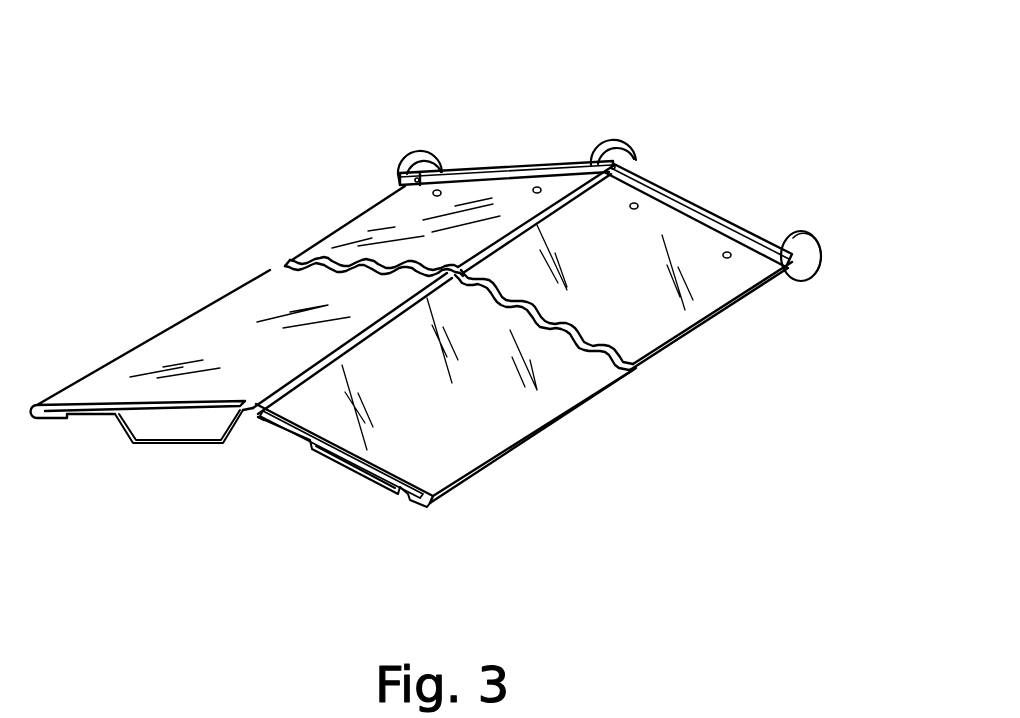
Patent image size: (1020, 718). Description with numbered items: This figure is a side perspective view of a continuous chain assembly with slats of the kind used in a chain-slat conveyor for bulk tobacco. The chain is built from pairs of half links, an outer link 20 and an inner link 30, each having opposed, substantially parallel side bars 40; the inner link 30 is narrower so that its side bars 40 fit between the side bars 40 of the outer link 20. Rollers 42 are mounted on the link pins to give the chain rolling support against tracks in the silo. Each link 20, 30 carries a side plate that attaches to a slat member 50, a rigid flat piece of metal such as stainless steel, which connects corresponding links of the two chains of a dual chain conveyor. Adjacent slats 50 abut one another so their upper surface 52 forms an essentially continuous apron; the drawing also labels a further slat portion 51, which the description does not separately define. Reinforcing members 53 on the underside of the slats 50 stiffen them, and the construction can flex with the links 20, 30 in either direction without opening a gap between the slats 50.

The outer link 20 is at (468, 163).
The inner link 30 is at (717, 203).
The side bars 40 is at (495, 160).
The roller 42 is at (412, 156).
The slat member 50 is at (225, 325).
The upper panel 51 is at (350, 236).
The upper surface 52 is at (403, 190).
The reinforcing members 53 is at (178, 424).